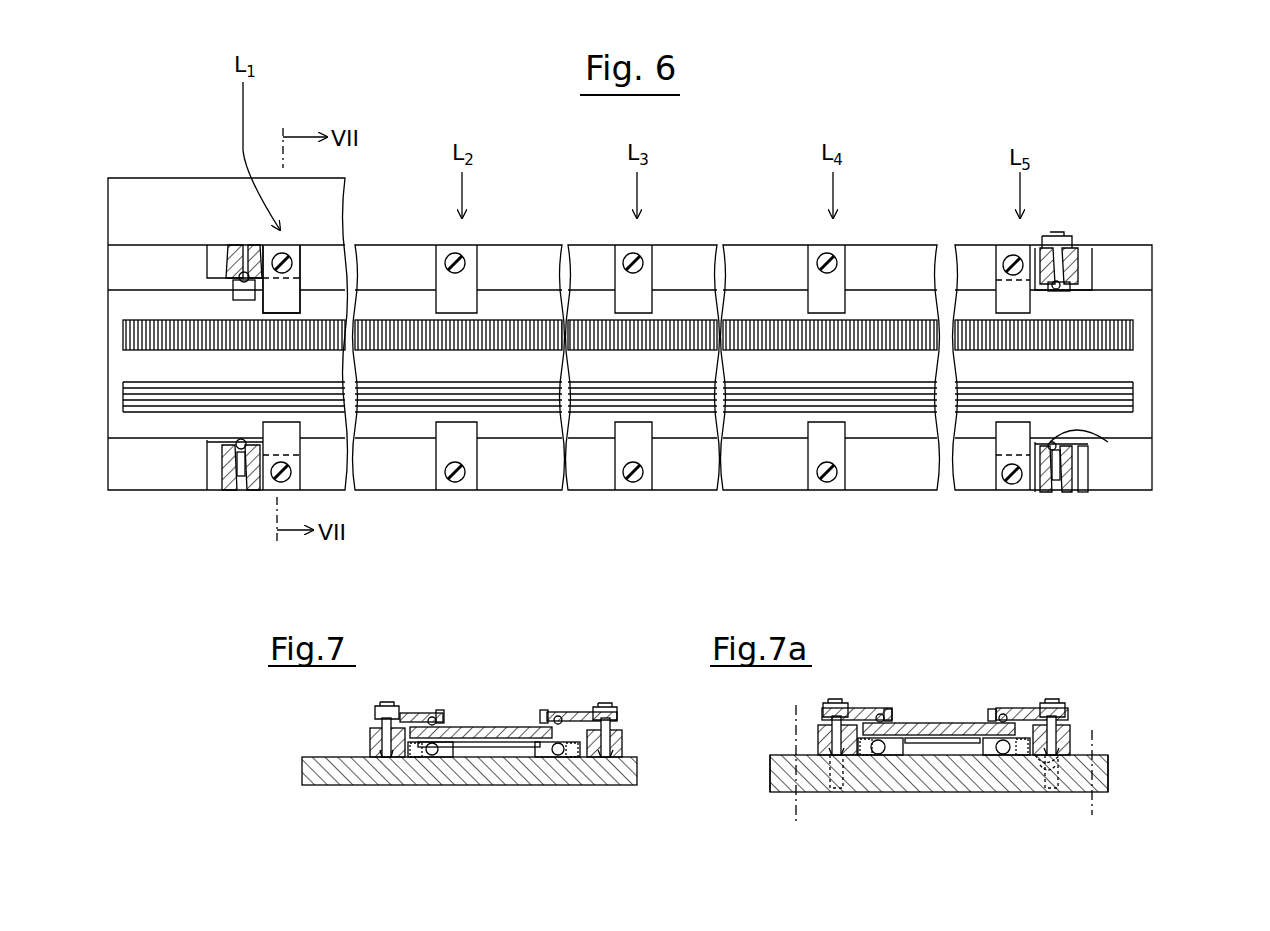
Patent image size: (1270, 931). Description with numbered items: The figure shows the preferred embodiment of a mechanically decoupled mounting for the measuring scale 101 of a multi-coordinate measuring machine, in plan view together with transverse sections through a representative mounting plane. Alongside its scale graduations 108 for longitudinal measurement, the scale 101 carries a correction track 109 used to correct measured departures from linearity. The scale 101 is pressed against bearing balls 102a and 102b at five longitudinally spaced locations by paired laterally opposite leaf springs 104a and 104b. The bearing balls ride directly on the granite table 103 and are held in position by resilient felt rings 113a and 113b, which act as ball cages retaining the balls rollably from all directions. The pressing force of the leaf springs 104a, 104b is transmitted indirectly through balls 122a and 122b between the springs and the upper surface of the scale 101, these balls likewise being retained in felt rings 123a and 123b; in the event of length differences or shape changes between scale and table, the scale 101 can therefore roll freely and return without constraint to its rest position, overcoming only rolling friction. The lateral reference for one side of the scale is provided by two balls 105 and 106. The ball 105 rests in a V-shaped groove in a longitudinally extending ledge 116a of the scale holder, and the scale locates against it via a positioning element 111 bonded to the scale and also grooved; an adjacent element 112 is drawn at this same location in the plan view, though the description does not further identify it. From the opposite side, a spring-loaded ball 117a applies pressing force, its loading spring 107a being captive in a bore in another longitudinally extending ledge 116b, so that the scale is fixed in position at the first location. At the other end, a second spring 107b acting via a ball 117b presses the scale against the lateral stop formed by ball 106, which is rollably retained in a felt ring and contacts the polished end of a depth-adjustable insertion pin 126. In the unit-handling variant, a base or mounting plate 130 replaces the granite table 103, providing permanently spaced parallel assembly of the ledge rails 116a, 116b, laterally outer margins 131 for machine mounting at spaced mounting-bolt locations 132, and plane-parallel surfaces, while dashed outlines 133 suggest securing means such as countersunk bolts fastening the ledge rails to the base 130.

In FIG. 6, the measuring scale 101 is at (1130, 425).
In FIG. 7, the measuring scale 101 is at (522, 728).
In FIG. 7A, the measuring scale 101 is at (1003, 724).
In FIG. 7, the bearing ball 102a is at (432, 752).
In FIG. 7A, the bearing ball 102a is at (878, 756).
In FIG. 7, the bearing ball 102b is at (556, 754).
In FIG. 7A, the bearing ball 102b is at (1000, 756).
In FIG. 7, the granite table 103 is at (628, 775).
In FIG. 6, the leaf spring 104a is at (286, 290).
In FIG. 7, the leaf spring 104a is at (406, 713).
In FIG. 7A, the leaf spring 104a is at (855, 708).
In FIG. 7, the leaf spring 104b is at (580, 712).
In FIG. 7A, the leaf spring 104b is at (1025, 708).
In FIG. 6, the ball 105 is at (235, 275).
In FIG. 6, the ball 106 is at (1075, 275).
In FIG. 6, the loading spring 107a is at (218, 450).
In FIG. 6, the second spring 107b is at (1038, 455).
In FIG. 6, the scale graduations 108 is at (1120, 333).
In FIG. 6, the correction track 109 is at (1112, 385).
In FIG. 6, the positioning element 111 is at (233, 290).
In FIG. 6, the pin 112 is at (226, 248).
In FIG. 7, the felt ring 113a is at (418, 758).
In FIG. 7A, the felt ring 113a is at (866, 758).
In FIG. 7, the felt ring 113b is at (575, 760).
In FIG. 7A, the felt ring 113b is at (1050, 780).
In FIG. 6, the ledge 116a is at (1140, 265).
In FIG. 7, the ledge 116a is at (370, 738).
In FIG. 7A, the ledge 116a is at (818, 740).
In FIG. 6, the ledge 116b is at (1133, 470).
In FIG. 7, the ledge 116b is at (622, 742).
In FIG. 7A, the ledge 116b is at (1070, 738).
In FIG. 6, the spring-loaded ball 117a is at (207, 442).
In FIG. 6, the ball 117b is at (1106, 442).
In FIG. 7, the ball 122a is at (436, 718).
In FIG. 7A, the ball 122a is at (884, 716).
In FIG. 7, the ball 122b is at (560, 716).
In FIG. 7A, the ball 122b is at (1007, 715).
In FIG. 7, the felt ring 123a is at (445, 713).
In FIG. 7A, the felt ring 123a is at (892, 712).
In FIG. 7, the felt ring 123b is at (610, 717).
In FIG. 7A, the felt ring 123b is at (1068, 712).
In FIG. 6, the insertion pin 126 is at (1060, 262).
In FIG. 7A, the base or mounting plate 130 is at (1105, 785).
In FIG. 7A, the laterally outer margins 131 is at (775, 765).
In FIG. 7A, the mounting-bolt locations 132 is at (795, 818).
In FIG. 7A, the dashed outlines 133 is at (1045, 775).